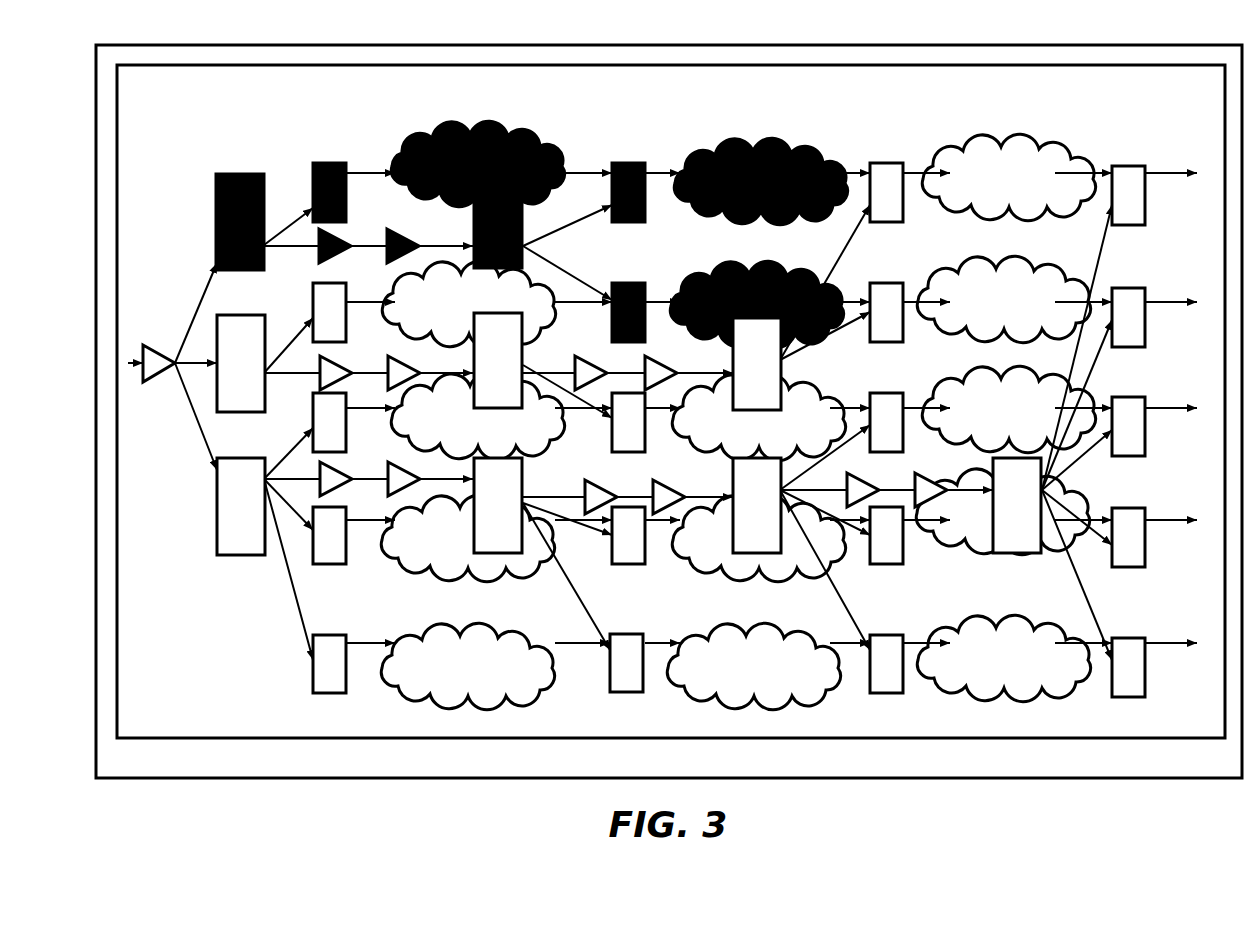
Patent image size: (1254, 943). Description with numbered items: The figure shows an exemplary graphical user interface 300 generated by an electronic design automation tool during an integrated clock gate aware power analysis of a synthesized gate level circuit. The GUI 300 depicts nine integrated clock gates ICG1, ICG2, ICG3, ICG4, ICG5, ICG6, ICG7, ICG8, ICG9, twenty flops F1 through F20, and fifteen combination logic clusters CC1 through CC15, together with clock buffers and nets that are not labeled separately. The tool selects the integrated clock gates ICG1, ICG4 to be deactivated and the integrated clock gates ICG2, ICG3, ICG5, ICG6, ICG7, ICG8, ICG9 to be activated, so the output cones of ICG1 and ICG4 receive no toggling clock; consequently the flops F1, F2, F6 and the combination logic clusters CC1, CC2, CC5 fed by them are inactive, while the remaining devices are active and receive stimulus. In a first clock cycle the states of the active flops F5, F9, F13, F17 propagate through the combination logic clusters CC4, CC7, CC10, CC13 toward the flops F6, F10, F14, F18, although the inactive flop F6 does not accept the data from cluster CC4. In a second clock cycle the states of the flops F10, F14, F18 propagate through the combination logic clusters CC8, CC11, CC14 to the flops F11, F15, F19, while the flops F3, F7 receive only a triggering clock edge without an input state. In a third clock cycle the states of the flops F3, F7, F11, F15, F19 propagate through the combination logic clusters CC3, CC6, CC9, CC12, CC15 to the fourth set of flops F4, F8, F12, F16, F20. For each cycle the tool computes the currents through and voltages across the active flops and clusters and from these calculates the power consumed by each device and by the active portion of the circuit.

The graphical user interface 300 is at (669, 411).
The integrated clock gate ICG1 is at (240, 222).
The integrated clock gate ICG2 is at (241, 363).
The integrated clock gate ICG3 is at (241, 506).
The integrated clock gate ICG4 is at (498, 229).
The integrated clock gate ICG5 is at (498, 360).
The integrated clock gate ICG6 is at (498, 505).
The integrated clock gate ICG7 is at (757, 364).
The integrated clock gate ICG8 is at (757, 505).
The integrated clock gate ICG9 is at (1017, 505).
The flop F1 is at (329, 192).
The flop F2 is at (628, 192).
The flop F3 is at (886, 192).
The flop F4 is at (1128, 195).
The flop F5 is at (329, 312).
The flop F6 is at (628, 312).
The flop F7 is at (886, 312).
The flop F8 is at (1128, 317).
The flop F9 is at (329, 422).
The flop F10 is at (628, 422).
The flop F11 is at (886, 422).
The flop F12 is at (1128, 426).
The flop F13 is at (329, 535).
The flop F14 is at (628, 535).
The flop F15 is at (886, 535).
The flop F16 is at (1128, 537).
The flop F17 is at (329, 664).
The flop F18 is at (626, 663).
The flop F19 is at (886, 664).
The flop F20 is at (1128, 667).
The combination logic cluster CC1 is at (477, 164).
The combination logic cluster CC2 is at (760, 181).
The combination logic cluster CC3 is at (1008, 177).
The combination logic cluster CC4 is at (468, 304).
The combination logic cluster CC5 is at (756, 304).
The combination logic cluster CC6 is at (1003, 299).
The combination logic cluster CC7 is at (477, 416).
The combination logic cluster CC8 is at (758, 417).
The combination logic cluster CC9 is at (1008, 409).
The combination logic cluster CC10 is at (467, 538).
The combination logic cluster CC11 is at (758, 538).
The combination logic cluster CC12 is at (1002, 511).
The combination logic cluster CC13 is at (467, 666).
The combination logic cluster CC14 is at (753, 666).
The combination logic cluster CC15 is at (1003, 658).